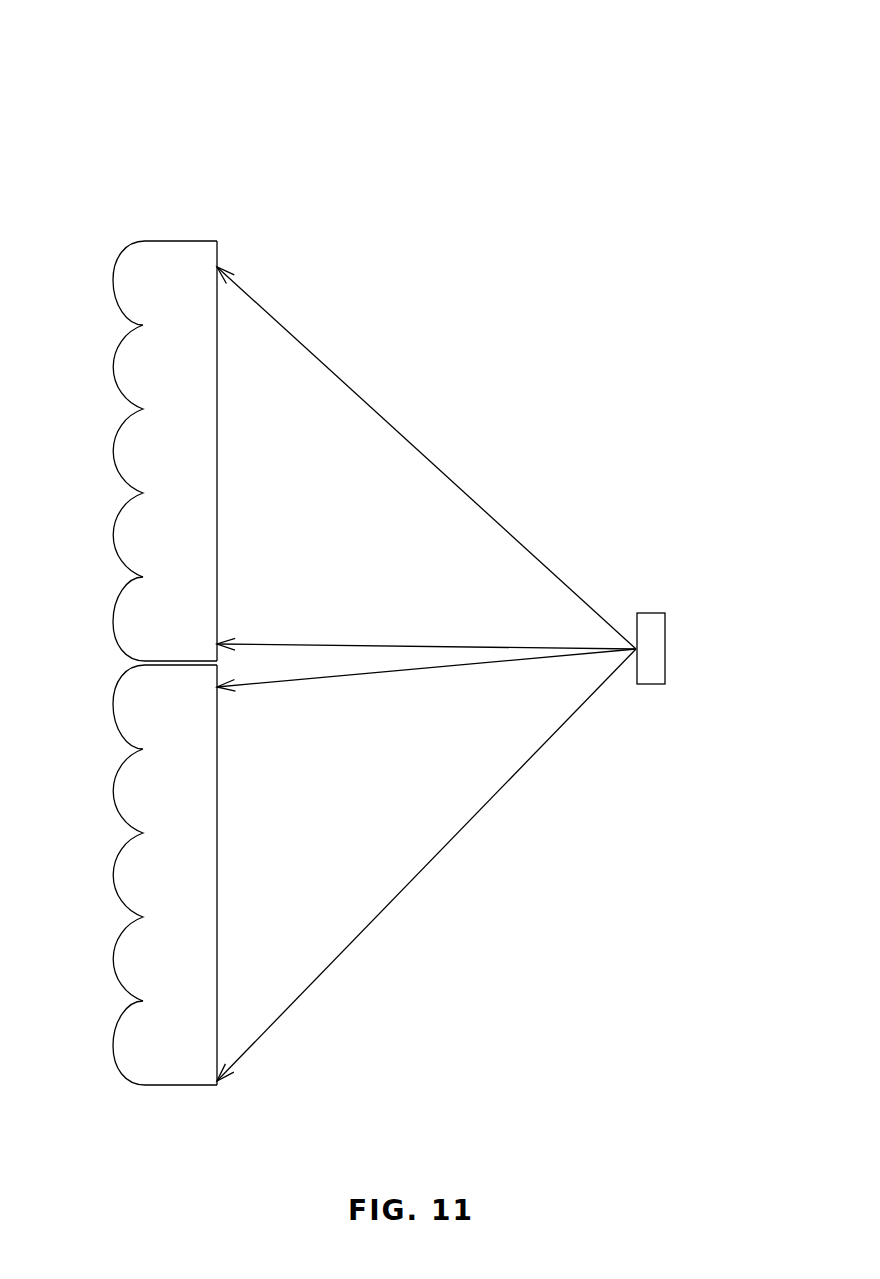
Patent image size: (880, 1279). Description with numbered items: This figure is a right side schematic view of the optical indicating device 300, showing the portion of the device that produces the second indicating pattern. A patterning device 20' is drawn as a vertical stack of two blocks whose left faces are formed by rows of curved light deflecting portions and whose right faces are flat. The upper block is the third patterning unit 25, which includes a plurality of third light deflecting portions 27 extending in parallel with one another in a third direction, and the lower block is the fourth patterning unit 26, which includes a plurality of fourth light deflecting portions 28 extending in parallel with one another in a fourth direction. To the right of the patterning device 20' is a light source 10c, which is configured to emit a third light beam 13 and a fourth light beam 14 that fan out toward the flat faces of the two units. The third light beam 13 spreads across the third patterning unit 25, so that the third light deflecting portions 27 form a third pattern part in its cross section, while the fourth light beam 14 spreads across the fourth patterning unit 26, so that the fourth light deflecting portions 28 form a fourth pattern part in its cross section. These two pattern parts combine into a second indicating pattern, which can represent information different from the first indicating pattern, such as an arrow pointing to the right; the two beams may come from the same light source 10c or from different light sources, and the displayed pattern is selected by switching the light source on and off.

The optical indicating device 300 is at (265, 27).
The patterning device 20' is at (168, 637).
The third light deflecting portions 27 is at (112, 262).
The fourth light deflecting portions 28 is at (113, 878).
The third patterning unit 25 is at (187, 545).
The fourth patterning unit 26 is at (166, 1063).
The third light beam 13 is at (388, 503).
The fourth light beam 14 is at (491, 747).
The light source 10c is at (666, 618).